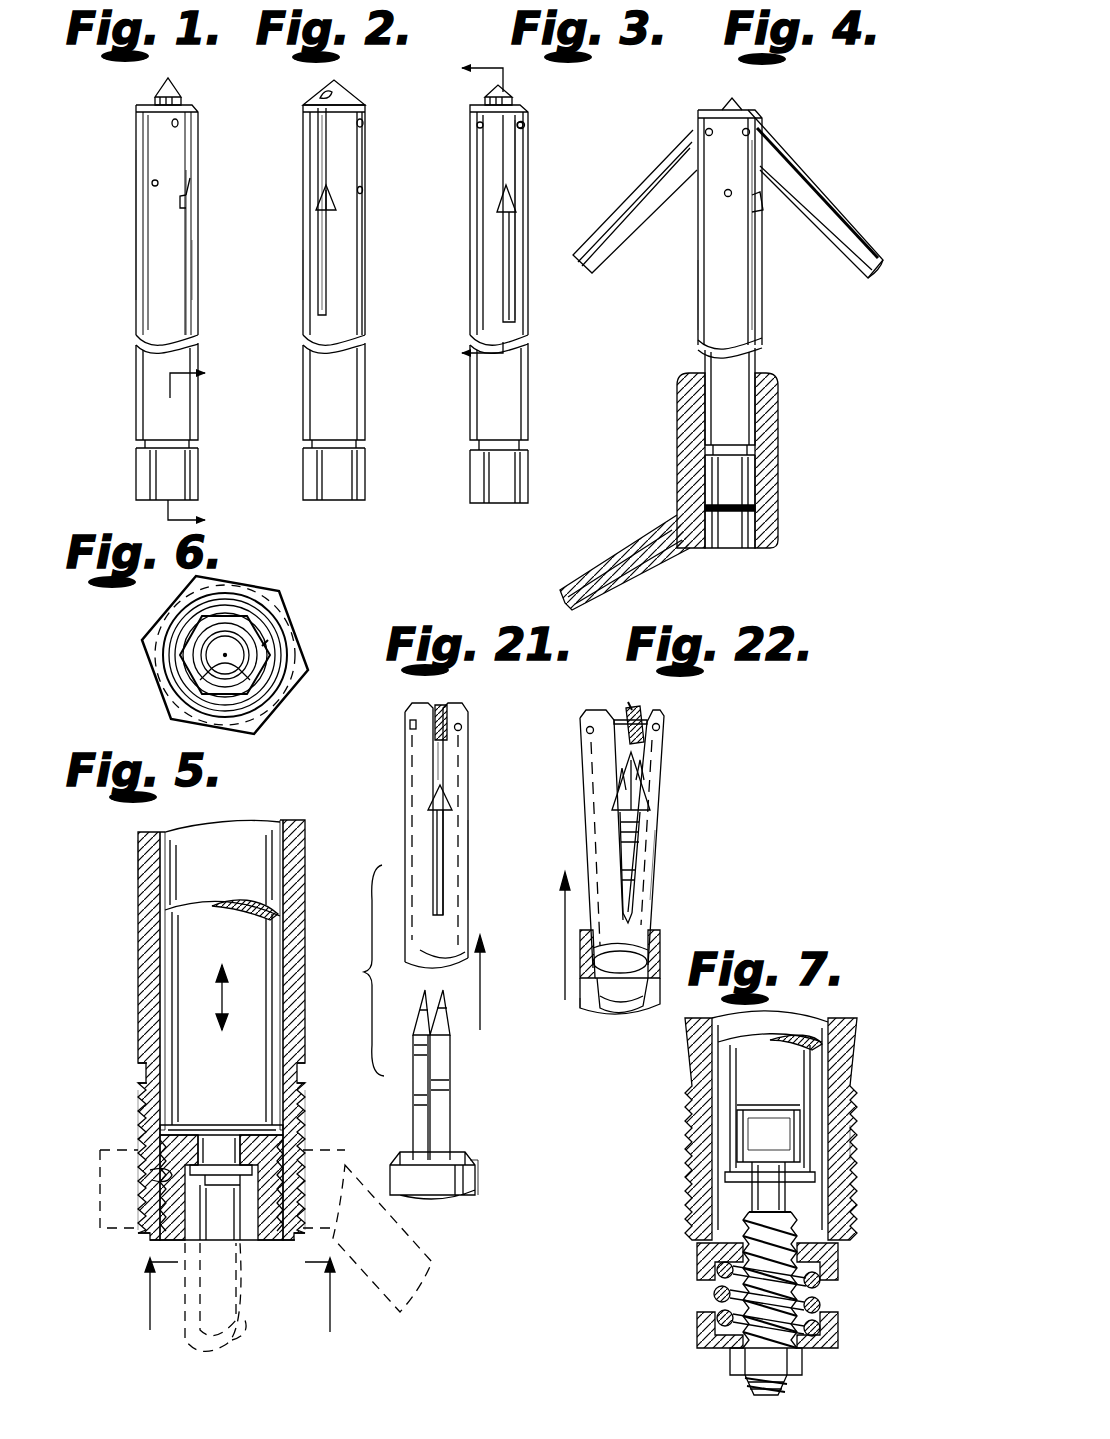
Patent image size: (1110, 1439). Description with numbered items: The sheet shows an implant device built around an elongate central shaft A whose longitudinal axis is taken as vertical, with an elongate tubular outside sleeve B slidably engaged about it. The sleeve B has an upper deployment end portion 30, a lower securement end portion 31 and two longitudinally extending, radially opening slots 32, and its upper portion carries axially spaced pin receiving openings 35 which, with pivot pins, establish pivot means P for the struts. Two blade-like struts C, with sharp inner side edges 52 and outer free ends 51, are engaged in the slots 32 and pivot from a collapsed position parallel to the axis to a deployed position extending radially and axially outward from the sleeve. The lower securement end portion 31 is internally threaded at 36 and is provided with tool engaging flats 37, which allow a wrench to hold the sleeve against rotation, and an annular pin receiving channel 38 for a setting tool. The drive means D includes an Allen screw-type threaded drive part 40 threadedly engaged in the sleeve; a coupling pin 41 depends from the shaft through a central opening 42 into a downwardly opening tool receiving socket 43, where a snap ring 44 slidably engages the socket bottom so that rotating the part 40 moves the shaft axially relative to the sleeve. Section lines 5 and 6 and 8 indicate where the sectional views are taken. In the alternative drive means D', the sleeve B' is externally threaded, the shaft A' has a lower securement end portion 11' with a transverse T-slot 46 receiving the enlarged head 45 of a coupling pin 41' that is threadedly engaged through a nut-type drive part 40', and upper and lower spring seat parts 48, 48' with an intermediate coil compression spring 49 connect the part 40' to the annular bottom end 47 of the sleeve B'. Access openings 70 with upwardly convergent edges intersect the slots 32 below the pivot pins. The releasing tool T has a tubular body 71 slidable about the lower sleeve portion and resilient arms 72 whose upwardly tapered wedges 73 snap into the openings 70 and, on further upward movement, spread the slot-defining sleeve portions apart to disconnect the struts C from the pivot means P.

In FIG. 1, the upper deployment end portion 30 is at (150, 170).
In FIG. 2, the upper deployment end portion 30 is at (362, 142).
In FIG. 3, the upper deployment end portion 30 is at (499, 220).
In FIG. 4, the upper deployment end portion 30 is at (722, 150).
In FIG. 21, the upper deployment end portion 30 is at (436, 835).
In FIG. 22, the upper deployment end portion 30 is at (662, 758).
In FIG. 1, the lower securement end portion 31 is at (145, 418).
In FIG. 2, the lower securement end portion 31 is at (355, 428).
In FIG. 3, the lower securement end portion 31 is at (499, 396).
In FIG. 4, the lower securement end portion 31 is at (708, 410).
In FIG. 5, the lower securement end portion 31 is at (140, 1008).
In FIG. 1, the slots 32 is at (190, 247).
In FIG. 3, the slots 32 is at (505, 310).
In FIG. 4, the slots 32 is at (762, 288).
In FIG. 21, the slots 32 is at (446, 763).
In FIG. 22, the slots 32 is at (640, 846).
In FIG. 1, the access openings 70 is at (186, 202).
In FIG. 2, the access openings 70 is at (322, 208).
In FIG. 3, the access openings 70 is at (500, 200).
In FIG. 4, the access openings 70 is at (762, 212).
In FIG. 21, the access openings 70 is at (440, 800).
In FIG. 22, the access openings 70 is at (636, 812).
In FIG. 4, the threaded drive part 40 is at (757, 460).
In FIG. 6, the threaded drive part 40 is at (242, 655).
In FIG. 5, the threaded drive part 40 is at (260, 1187).
In FIG. 6, the coupling pin 41 is at (173, 675).
In FIG. 5, the coupling pin 41 is at (241, 1182).
In FIG. 6, the tool receiving socket 43 is at (255, 648).
In FIG. 6, the snap ring 44 is at (250, 635).
In FIG. 5, the snap ring 44 is at (175, 1243).
In FIG. 4, the outer free ends 51 is at (872, 278).
In FIG. 22, the inner side edge 52 is at (642, 716).
In FIG. 22, the pin receiving openings 35 is at (660, 730).
In FIG. 5, the internal threads 36 is at (150, 1172).
In FIG. 5, the tool engaging flats 37 is at (140, 1105).
In FIG. 5, the pin receiving channel 38 is at (140, 1072).
In FIG. 5, the central opening 42 is at (285, 1140).
In FIG. 21, the tubular body 71 is at (478, 1178).
In FIG. 22, the tubular body 71 is at (655, 940).
In FIG. 21, the resilient arms 72 is at (455, 1052).
In FIG. 22, the resilient arms 72 is at (648, 828).
In FIG. 21, the wedges 73 is at (420, 1005).
In FIG. 22, the wedges 73 is at (636, 775).
In FIG. 7, the enlarged head 45 is at (755, 1137).
In FIG. 7, the T-slot 46 is at (750, 1125).
In FIG. 7, the annular bottom end 47 is at (838, 1250).
In FIG. 7, the upper spring seat part 48 is at (719, 1259).
In FIG. 7, the lower spring seat part 48' is at (719, 1327).
In FIG. 7, the coil compression spring 49 is at (714, 1292).
In FIG. 7, the threaded drive part 40' is at (706, 1371).
In FIG. 7, the coupling pin 41' is at (695, 1187).
In FIG. 7, the piston 11' is at (711, 1088).
In FIG. 1, the central shaft A is at (195, 82).
In FIG. 2, the central shaft A is at (347, 82).
In FIG. 3, the central shaft A is at (533, 91).
In FIG. 4, the central shaft A is at (757, 93).
In FIG. 5, the central shaft A is at (181, 1012).
In FIG. 7, the shaft A' is at (717, 1113).
In FIG. 1, the outside sleeve B is at (103, 220).
In FIG. 2, the outside sleeve B is at (275, 282).
In FIG. 3, the outside sleeve B is at (445, 275).
In FIG. 4, the outside sleeve B is at (661, 295).
In FIG. 5, the outside sleeve B is at (111, 861).
In FIG. 21, the outside sleeve B is at (499, 860).
In FIG. 22, the outside sleeve B is at (688, 865).
In FIG. 7, the sleeve B' is at (741, 1125).
In FIG. 1, the struts C is at (200, 280).
In FIG. 2, the struts C is at (312, 150).
In FIG. 3, the struts C is at (520, 244).
In FIG. 4, the struts C is at (828, 195).
In FIG. 21, the struts C is at (432, 735).
In FIG. 22, the struts C is at (632, 706).
In FIG. 1, the drive means D is at (134, 476).
In FIG. 2, the drive means D is at (334, 491).
In FIG. 3, the drive means D is at (474, 492).
In FIG. 4, the drive means D is at (728, 520).
In FIG. 6, the drive means D is at (289, 605).
In FIG. 5, the drive means D is at (266, 1231).
In FIG. 7, the drive means D' is at (874, 1119).
In FIG. 1, the pivot means P is at (170, 124).
In FIG. 3, the pivot means P is at (533, 127).
In FIG. 21, the pivot means P is at (470, 722).
In FIG. 21, the releasing tool T is at (478, 1168).
In FIG. 22, the releasing tool T is at (578, 996).
In FIG. 1, the section line 5- 5 is at (202, 446).
In FIG. 5, the section line 6- 6 is at (209, 1304).
In FIG. 3, the section line 8- 8 is at (465, 224).